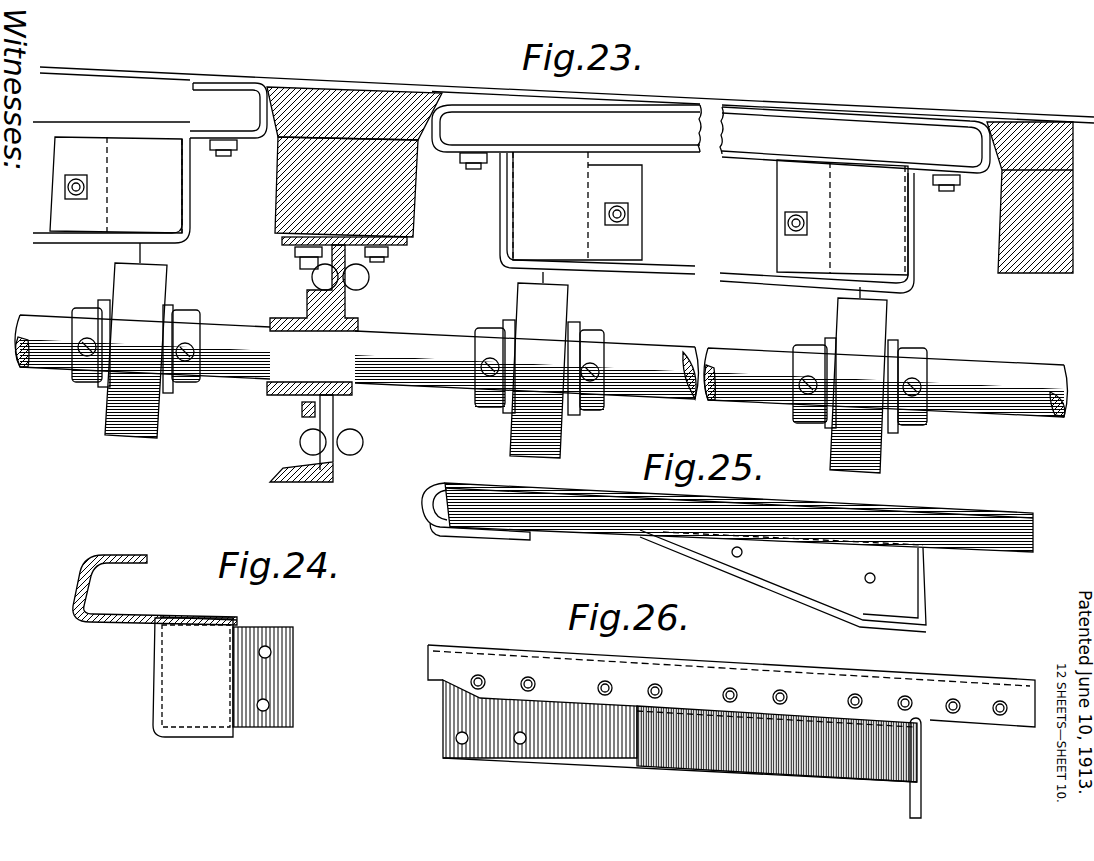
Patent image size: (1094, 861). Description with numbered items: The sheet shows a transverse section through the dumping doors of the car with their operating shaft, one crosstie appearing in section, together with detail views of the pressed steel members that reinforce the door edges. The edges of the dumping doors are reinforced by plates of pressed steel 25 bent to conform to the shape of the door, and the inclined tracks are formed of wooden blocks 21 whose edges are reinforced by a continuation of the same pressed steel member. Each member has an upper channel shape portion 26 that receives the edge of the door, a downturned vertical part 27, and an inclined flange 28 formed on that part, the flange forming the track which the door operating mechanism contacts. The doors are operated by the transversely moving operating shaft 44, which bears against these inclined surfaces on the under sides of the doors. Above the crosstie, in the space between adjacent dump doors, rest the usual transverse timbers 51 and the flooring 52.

In FIG. 23, the wooden blocks 21 is at (137, 135).
In FIG. 23, the pressed steel plates 25 is at (252, 84).
In FIG. 24, the pressed steel plates 25 is at (86, 578).
In FIG. 25, the pressed steel plates 25 is at (727, 509).
In FIG. 26, the pressed steel plates 25 is at (731, 686).
In FIG. 24, the upper channel shape portion 26 is at (179, 599).
In FIG. 25, the upper channel shape portion 26 is at (893, 483).
In FIG. 23, the downturned vertical part 27 is at (192, 199).
In FIG. 24, the downturned vertical part 27 is at (152, 669).
In FIG. 25, the downturned vertical part 27 is at (783, 577).
In FIG. 26, the downturned vertical part 27 is at (806, 723).
In FIG. 23, the inclined flange 28 is at (172, 250).
In FIG. 24, the inclined flange 28 is at (196, 740).
In FIG. 25, the inclined flange 28 is at (762, 579).
In FIG. 26, the inclined flange 28 is at (766, 772).
In FIG. 23, the operating shaft 44 is at (228, 338).
In FIG. 23, the transverse timbers 51 is at (292, 198).
In FIG. 23, the flooring 52 is at (346, 90).